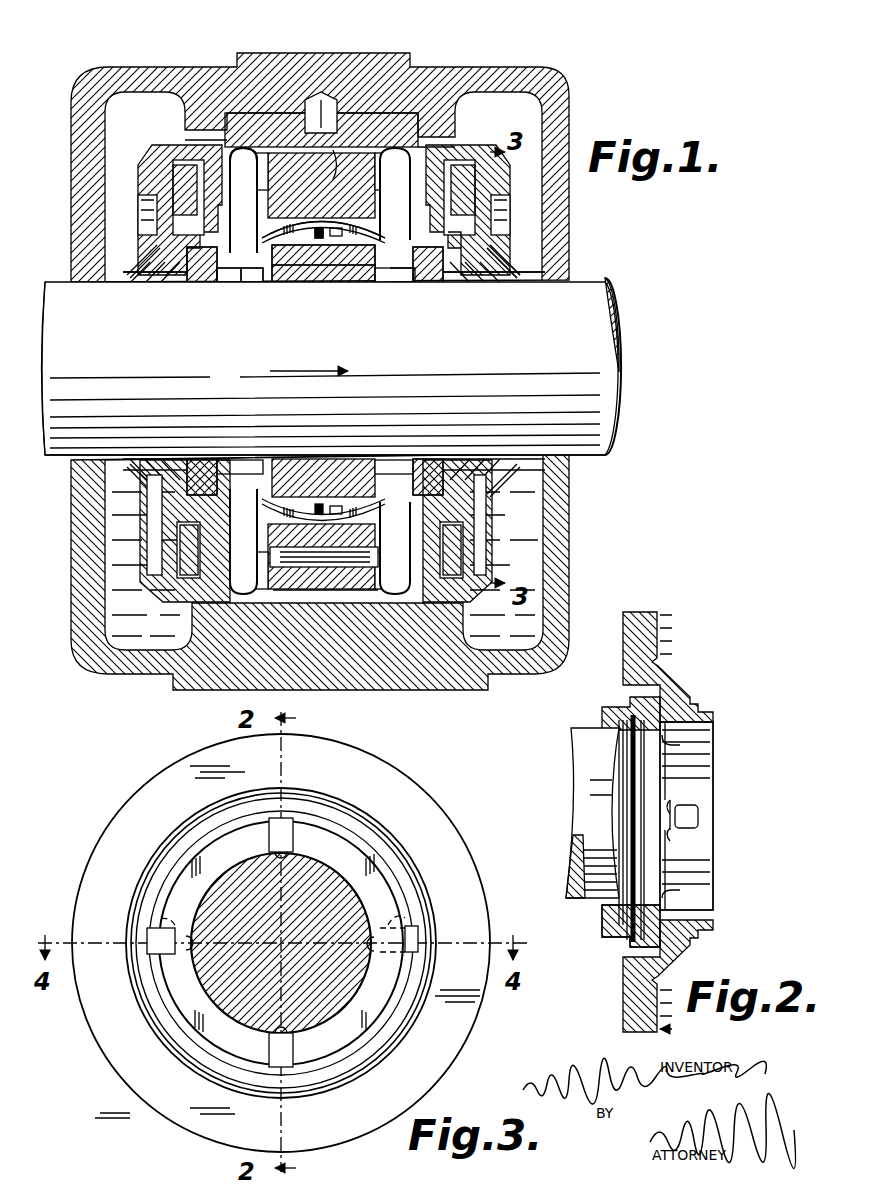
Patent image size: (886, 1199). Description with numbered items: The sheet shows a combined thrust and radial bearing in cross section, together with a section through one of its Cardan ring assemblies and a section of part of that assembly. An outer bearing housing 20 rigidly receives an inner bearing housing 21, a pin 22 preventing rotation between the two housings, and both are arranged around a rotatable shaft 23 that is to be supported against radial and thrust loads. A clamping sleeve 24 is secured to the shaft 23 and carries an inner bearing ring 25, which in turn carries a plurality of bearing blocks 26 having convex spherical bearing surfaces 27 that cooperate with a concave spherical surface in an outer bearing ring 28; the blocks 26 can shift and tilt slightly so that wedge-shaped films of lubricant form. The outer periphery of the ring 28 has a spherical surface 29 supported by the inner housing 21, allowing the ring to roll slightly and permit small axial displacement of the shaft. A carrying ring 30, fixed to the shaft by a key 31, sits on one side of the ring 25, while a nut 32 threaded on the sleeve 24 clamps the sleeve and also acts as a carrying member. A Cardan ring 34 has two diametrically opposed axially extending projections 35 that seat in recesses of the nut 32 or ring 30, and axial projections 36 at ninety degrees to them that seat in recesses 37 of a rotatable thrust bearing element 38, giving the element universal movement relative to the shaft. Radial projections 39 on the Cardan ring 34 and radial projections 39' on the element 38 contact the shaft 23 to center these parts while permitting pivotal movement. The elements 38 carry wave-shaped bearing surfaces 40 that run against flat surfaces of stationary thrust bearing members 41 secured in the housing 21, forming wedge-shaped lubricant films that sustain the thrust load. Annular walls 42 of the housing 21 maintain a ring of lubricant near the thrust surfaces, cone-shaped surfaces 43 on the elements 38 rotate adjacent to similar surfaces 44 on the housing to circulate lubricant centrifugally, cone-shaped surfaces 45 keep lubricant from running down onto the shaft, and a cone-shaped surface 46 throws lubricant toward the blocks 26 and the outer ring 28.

In FIG. 1, the outer bearing housing 20 is at (569, 562).
In FIG. 1, the inner bearing housing 21 is at (262, 120).
In FIG. 1, the pin 22 is at (330, 100).
In FIG. 1, the rotatable shaft 23 is at (607, 310).
In FIG. 2, the rotatable shaft 23 is at (580, 783).
In FIG. 3, the rotatable shaft 23 is at (281, 943).
In FIG. 1, the clamping sleeve 24 is at (345, 270).
In FIG. 2, the clamping sleeve 24 is at (608, 726).
In FIG. 1, the inner bearing ring 25 is at (315, 245).
In FIG. 1, the bearing blocks 26 is at (290, 235).
In FIG. 1, the convex spherical bearing surfaces 27 is at (366, 268).
In FIG. 1, the outer bearing ring 28 is at (334, 215).
In FIG. 1, the spherical surface 29 is at (333, 160).
In FIG. 1, the carrying ring 30 is at (244, 284).
In FIG. 1, the key 31 is at (238, 282).
In FIG. 1, the nut 32 is at (398, 272).
In FIG. 2, the nut 32 is at (605, 928).
In FIG. 1, the Cardan ring 34 is at (197, 280).
In FIG. 2, the Cardan ring 34 is at (660, 775).
In FIG. 3, the Cardan ring 34 is at (372, 1022).
In FIG. 1, the axially extending projections 35 is at (218, 465).
In FIG. 2, the axially extending projections 35 is at (635, 700).
In FIG. 3, the axially extending projections 35 is at (269, 836).
In FIG. 2, the axial projections 36 is at (678, 812).
In FIG. 3, the axial projections 36 is at (150, 948).
In FIG. 2, the recesses 37 is at (670, 838).
In FIG. 3, the recesses 37 is at (158, 957).
In FIG. 1, the rotatable thrust bearing element 38 is at (195, 182).
In FIG. 2, the rotatable thrust bearing element 38 is at (676, 690).
In FIG. 3, the rotatable thrust bearing element 38 is at (455, 840).
In FIG. 1, the inwardly extending radial projections 39 is at (334, 299).
In FIG. 2, the inwardly extending radial projections 39 is at (680, 815).
In FIG. 3, the inwardly extending radial projections 39 is at (302, 942).
In FIG. 2, the inwardly extending radial projections 39' is at (710, 816).
In FIG. 3, the inwardly extending radial projections 39' is at (283, 943).
In FIG. 2, the bearing surfaces 40 is at (662, 640).
In FIG. 1, the stationary thrust bearing members 41 is at (185, 553).
In FIG. 1, the annular walls 42 is at (192, 145).
In FIG. 1, the cone-shaped surfaces 43 is at (482, 240).
In FIG. 1, the cone-shaped surfaces 44 is at (478, 222).
In FIG. 1, the cone-shaped surfaces 45 is at (510, 272).
In FIG. 1, the cone-shaped surface 46 is at (256, 246).